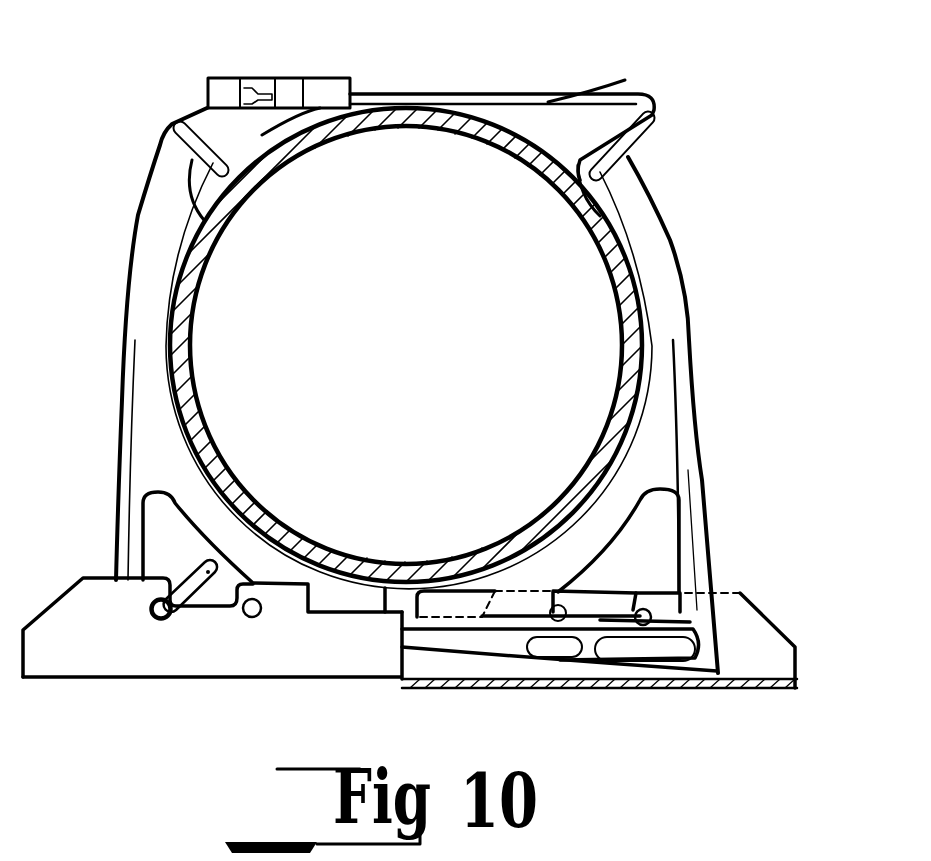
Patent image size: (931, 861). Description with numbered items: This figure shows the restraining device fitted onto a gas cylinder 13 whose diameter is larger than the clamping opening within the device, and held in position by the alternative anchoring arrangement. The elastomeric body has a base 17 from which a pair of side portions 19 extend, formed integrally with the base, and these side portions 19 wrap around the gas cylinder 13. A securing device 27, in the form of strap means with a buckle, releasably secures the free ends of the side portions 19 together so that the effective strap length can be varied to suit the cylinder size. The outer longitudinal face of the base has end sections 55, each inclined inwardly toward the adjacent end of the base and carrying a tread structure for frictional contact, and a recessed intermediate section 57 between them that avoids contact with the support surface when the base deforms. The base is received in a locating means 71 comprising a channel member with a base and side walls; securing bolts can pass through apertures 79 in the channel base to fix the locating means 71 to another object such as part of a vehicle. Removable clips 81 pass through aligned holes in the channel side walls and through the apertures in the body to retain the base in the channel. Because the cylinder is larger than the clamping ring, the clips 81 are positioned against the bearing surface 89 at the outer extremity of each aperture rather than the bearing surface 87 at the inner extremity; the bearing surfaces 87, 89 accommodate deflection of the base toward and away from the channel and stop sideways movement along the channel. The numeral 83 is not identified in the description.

The gas cylinder 13 is at (541, 134).
The securing device 27 is at (492, 97).
The side portions 19 is at (143, 272).
The bearing surface 87 is at (658, 525).
The bearing surface 89 is at (702, 597).
The removable clips 81 is at (187, 617).
The holes 83 is at (150, 612).
The end sections 55 is at (585, 668).
The intermediate section 57 is at (487, 658).
The apertures 79 is at (760, 689).
The base 17 is at (703, 643).
The locating means 71 is at (794, 663).